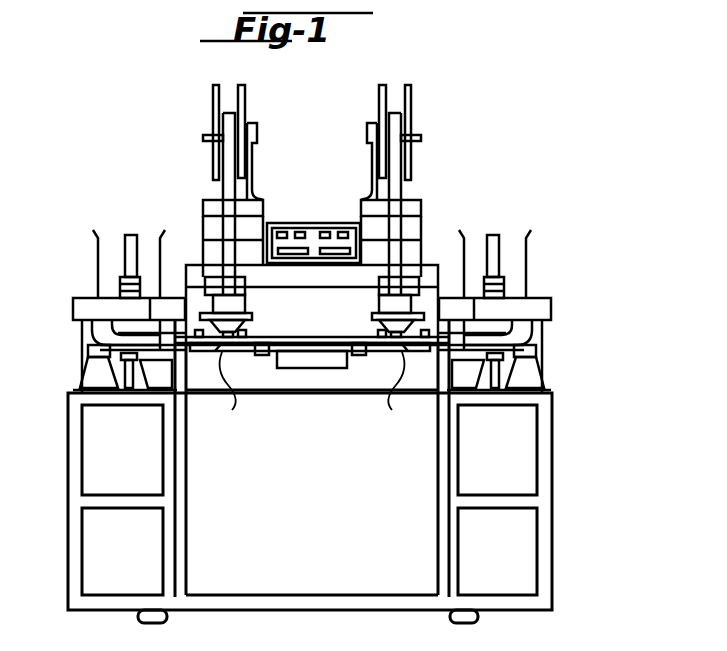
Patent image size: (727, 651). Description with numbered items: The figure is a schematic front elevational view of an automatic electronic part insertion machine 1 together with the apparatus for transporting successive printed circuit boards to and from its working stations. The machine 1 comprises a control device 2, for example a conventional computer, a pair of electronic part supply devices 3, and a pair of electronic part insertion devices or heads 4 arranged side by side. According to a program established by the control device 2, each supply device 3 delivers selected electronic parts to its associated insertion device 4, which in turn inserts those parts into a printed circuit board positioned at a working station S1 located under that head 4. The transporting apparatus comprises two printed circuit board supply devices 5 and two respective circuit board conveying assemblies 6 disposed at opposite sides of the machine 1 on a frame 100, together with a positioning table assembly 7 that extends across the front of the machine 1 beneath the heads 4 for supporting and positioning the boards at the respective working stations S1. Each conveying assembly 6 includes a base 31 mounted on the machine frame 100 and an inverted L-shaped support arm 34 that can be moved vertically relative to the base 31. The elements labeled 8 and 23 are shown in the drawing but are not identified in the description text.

The electronic part insertion machine 1 is at (298, 140).
The control device 2 is at (306, 222).
The electronic part supply device 3 is at (208, 166).
The electronic part insertion device 4 is at (236, 333).
The printed circuit board supply device 5 is at (92, 290).
The circuit board conveying assembly 6 is at (98, 350).
The positioning table assembly 7 is at (322, 357).
The elbow pipe 8 is at (74, 302).
The guide post 23 is at (98, 238).
The base 31 is at (92, 372).
The support arm 34 is at (546, 312).
The frame 100 is at (300, 607).
The working station S1 is at (312, 400).